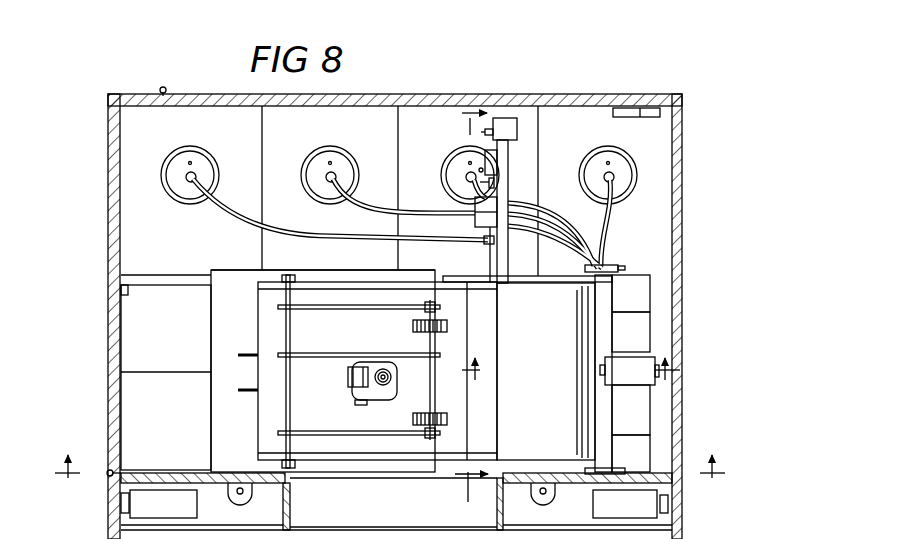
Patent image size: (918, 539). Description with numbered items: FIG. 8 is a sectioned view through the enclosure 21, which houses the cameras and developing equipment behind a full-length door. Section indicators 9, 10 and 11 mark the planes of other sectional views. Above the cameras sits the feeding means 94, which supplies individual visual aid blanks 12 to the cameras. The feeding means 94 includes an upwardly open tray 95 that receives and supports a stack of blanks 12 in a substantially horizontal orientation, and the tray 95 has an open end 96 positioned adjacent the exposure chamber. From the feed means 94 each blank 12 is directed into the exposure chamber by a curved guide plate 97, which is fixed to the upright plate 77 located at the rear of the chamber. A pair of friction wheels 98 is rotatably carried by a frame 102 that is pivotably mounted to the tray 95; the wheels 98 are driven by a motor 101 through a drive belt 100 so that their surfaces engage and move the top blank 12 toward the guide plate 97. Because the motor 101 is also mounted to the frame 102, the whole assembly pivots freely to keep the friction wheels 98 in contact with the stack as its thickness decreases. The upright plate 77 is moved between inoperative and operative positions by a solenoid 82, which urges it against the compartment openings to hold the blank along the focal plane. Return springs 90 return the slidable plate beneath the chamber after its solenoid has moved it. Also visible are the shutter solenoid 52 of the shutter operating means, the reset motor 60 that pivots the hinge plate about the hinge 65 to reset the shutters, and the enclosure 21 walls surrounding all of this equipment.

The enclosure 21 is at (106, 330).
The section line 10- 10 is at (392, 480).
The section line 9- 9 is at (466, 310).
The section line 11- 11 is at (579, 377).
The reset motor 60 is at (511, 129).
The hinge 65 is at (486, 153).
The solenoid 52 is at (475, 207).
The return springs 90 is at (607, 268).
The tray 95 is at (353, 250).
The visual aid blank 12 is at (272, 320).
The feeding means 94 is at (256, 425).
The open end 96 is at (468, 326).
The curved guide plate 97 is at (548, 407).
The friction wheels 98 is at (413, 328).
The frame 102 is at (316, 304).
The motor 101 is at (347, 376).
The drive belt 100 is at (386, 401).
The upright plate 77 is at (592, 334).
The solenoid 82 is at (645, 360).